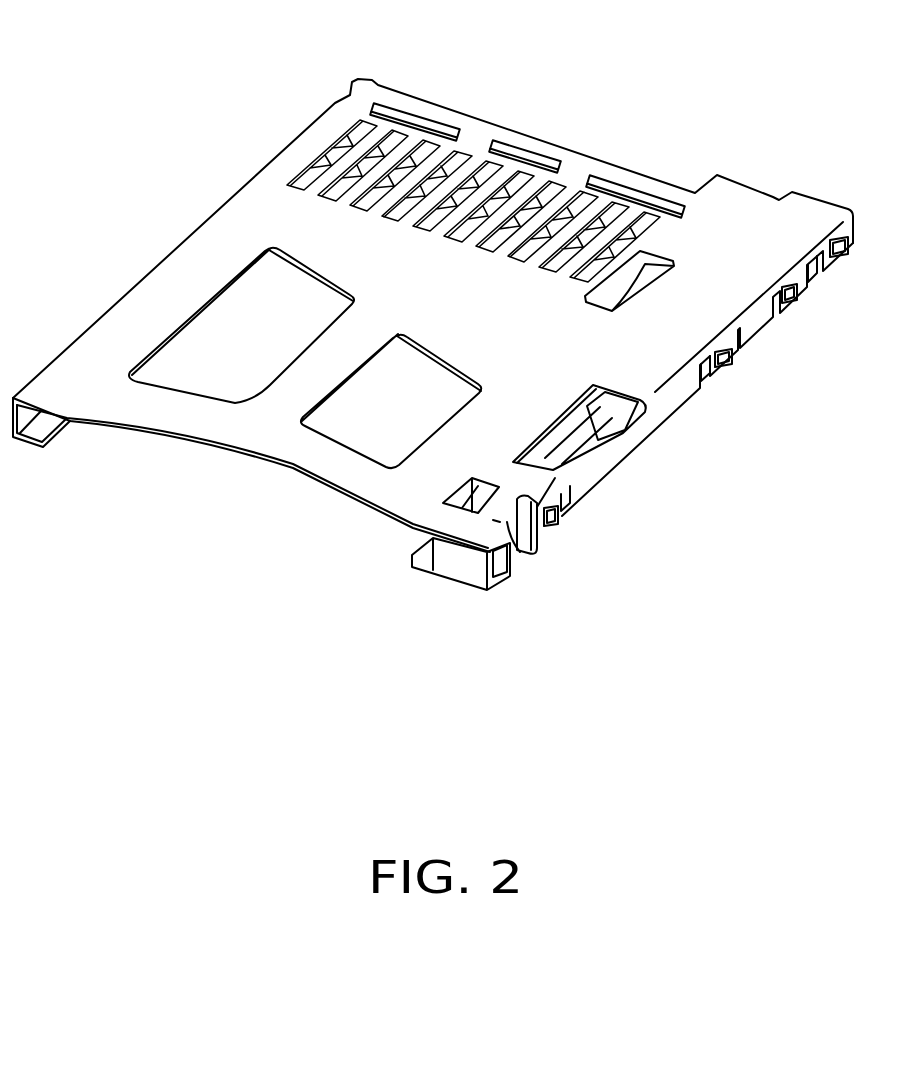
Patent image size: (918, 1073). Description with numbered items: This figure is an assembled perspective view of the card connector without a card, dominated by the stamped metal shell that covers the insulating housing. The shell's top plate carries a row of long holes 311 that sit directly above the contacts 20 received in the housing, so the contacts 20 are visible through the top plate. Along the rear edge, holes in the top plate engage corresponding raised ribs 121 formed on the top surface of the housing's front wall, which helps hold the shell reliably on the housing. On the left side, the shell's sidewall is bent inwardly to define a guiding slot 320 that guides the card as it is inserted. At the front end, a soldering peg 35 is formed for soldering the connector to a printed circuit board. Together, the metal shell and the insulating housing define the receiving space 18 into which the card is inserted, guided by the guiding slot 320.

The receiving space 18 is at (408, 536).
The contacts 20 is at (462, 158).
The soldering peg 35 is at (523, 558).
The raised ribs 121 is at (631, 190).
The long holes 311 is at (392, 178).
The guiding slot 320 is at (33, 430).